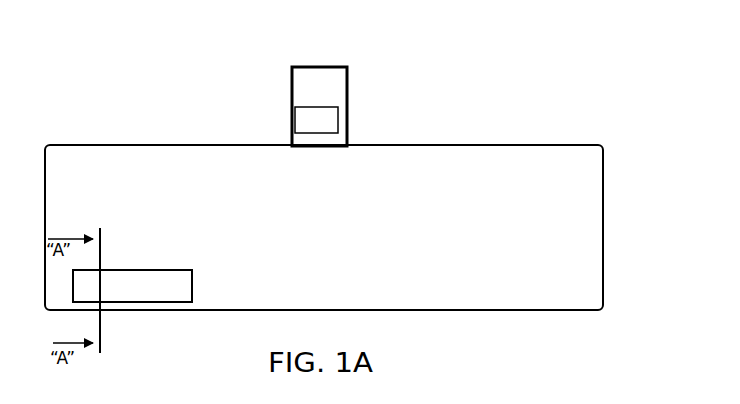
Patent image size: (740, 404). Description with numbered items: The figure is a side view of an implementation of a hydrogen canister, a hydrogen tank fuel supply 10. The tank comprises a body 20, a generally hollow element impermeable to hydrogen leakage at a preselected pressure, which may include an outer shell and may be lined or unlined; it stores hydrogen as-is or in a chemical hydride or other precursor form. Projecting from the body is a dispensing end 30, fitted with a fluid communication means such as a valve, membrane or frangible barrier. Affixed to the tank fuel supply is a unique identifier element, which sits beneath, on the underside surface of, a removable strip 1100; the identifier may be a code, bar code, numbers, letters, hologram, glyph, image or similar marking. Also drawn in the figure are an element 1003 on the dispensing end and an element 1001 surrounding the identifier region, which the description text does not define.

The hydrogen tank fuel supply 10 is at (446, 129).
The body 20 is at (324, 227).
The dispensing end 30 is at (291, 90).
The indicator window 1003 is at (316, 120).
The display frame 1001 is at (187, 283).
The removable strip 1100 is at (178, 266).